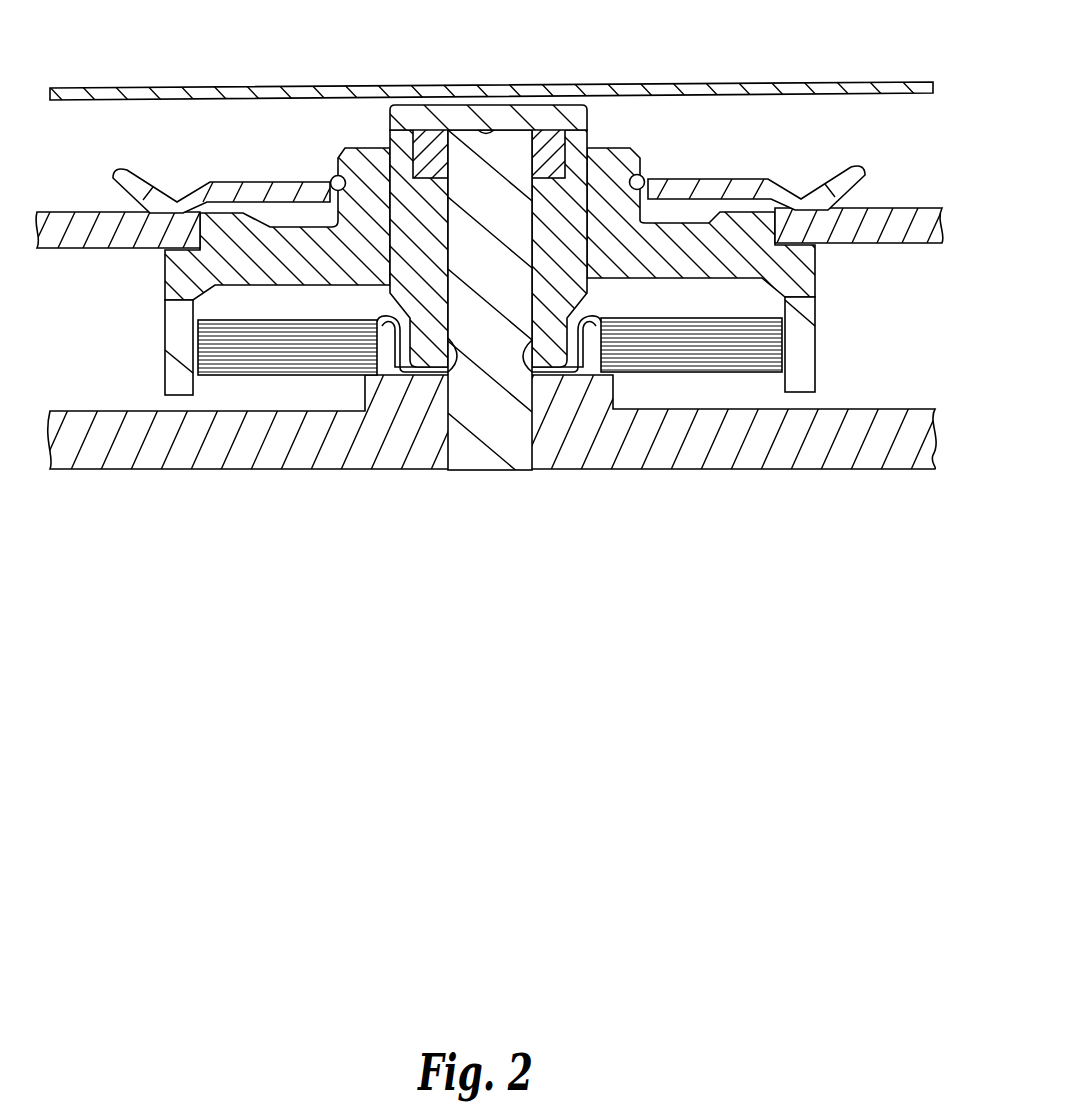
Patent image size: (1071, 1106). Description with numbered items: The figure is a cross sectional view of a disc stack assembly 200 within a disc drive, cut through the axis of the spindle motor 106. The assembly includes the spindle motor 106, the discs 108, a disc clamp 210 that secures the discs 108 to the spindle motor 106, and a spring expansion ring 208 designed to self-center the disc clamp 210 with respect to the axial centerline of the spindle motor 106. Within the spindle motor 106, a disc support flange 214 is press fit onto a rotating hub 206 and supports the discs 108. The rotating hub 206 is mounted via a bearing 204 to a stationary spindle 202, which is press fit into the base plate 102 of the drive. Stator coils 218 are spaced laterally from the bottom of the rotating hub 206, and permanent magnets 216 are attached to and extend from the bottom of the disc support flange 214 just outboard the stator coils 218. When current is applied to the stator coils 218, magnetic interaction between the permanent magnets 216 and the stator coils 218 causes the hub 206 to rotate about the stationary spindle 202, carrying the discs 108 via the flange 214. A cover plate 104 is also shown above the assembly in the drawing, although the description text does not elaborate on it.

The base plate 102 is at (395, 455).
The top cover plate 104 is at (177, 83).
The spindle motor 106 is at (271, 159).
The discs 108 is at (885, 232).
The disc stack assembly 200 is at (266, 565).
The stationary spindle 202 is at (515, 440).
The bearing 204 is at (548, 148).
The rotating hub 206 is at (398, 190).
The spring expansion ring 208 is at (637, 178).
The disc clamp 210 is at (747, 177).
The disc support flange 214 is at (643, 253).
The permanent magnets 216 is at (177, 347).
The stator coils 218 is at (750, 363).